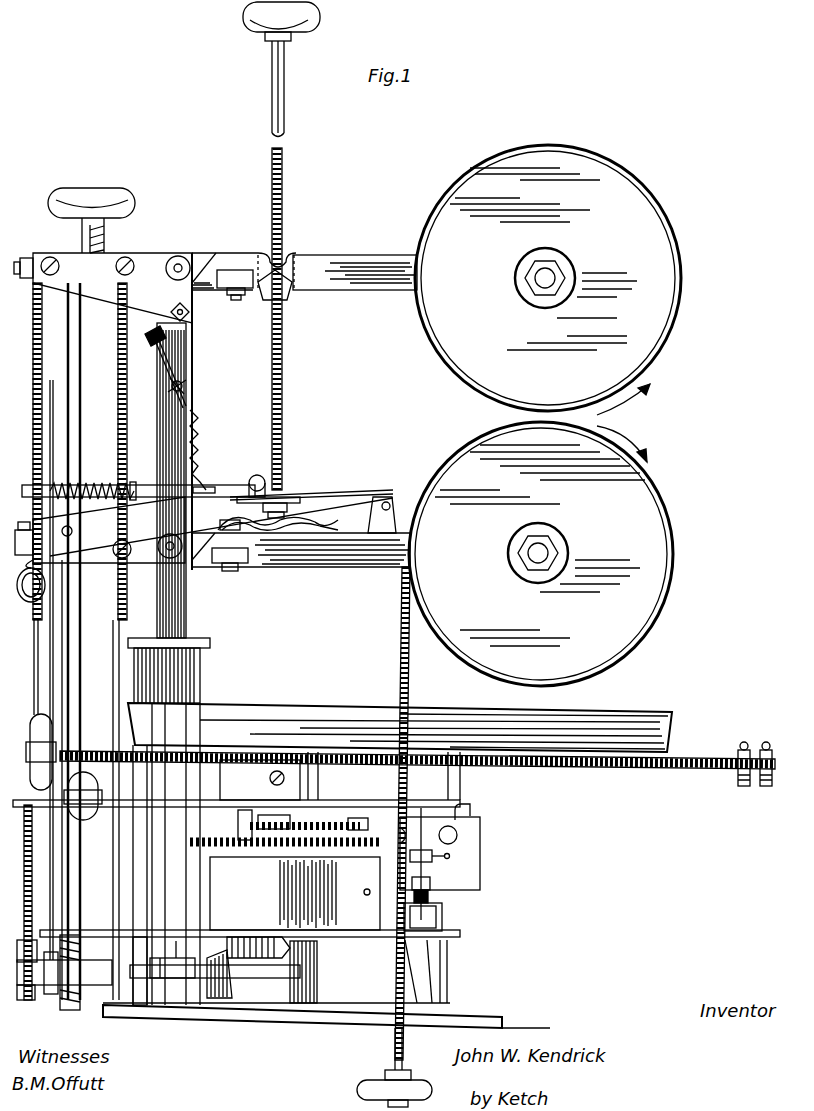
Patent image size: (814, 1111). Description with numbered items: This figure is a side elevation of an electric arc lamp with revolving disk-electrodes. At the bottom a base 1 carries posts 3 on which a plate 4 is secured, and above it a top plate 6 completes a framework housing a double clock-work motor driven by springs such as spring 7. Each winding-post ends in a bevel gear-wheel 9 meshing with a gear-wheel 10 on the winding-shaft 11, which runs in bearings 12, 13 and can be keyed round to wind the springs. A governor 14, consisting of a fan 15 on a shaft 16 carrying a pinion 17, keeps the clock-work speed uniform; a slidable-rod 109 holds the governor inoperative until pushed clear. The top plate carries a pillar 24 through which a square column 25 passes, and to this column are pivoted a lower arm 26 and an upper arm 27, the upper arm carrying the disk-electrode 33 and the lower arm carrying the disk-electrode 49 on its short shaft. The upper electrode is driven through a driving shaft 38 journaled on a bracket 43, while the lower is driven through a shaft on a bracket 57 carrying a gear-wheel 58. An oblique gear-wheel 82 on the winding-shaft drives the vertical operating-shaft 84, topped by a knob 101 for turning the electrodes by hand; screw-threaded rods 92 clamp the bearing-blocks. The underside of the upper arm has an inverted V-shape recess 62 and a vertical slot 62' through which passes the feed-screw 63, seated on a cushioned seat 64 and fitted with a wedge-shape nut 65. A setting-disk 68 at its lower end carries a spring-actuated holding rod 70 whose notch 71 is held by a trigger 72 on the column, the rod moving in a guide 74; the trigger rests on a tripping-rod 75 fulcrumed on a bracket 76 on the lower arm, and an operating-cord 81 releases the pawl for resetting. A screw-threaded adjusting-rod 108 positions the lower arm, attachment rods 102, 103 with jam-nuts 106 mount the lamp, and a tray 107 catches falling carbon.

The base 1 is at (298, 1022).
The posts 3 is at (430, 975).
The plate 4 is at (382, 941).
The top plate 6 is at (466, 806).
The spring 7 is at (285, 870).
The bevel gear-wheel 9 is at (246, 975).
The gear-wheel 10 is at (215, 998).
The winding-shaft 11 is at (160, 980).
The bearing 12 is at (310, 968).
The bearing 13 is at (170, 948).
The governor 14 is at (460, 866).
The fan 15 is at (458, 843).
The shaft 16 is at (432, 922).
The pinion 17 is at (458, 890).
The pillar 24 is at (190, 684).
The column 25 is at (187, 610).
The arm 26 is at (301, 516).
The arm 27 is at (380, 288).
The disk-electrode 33 is at (548, 278).
The driving shaft 38 is at (27, 256).
The bracket 43 is at (112, 288).
The disk-electrode 49 is at (541, 554).
The bracket 57 is at (100, 530).
The gear-wheel 58 is at (62, 600).
The inverted V-shape recess 62 is at (283, 296).
The vertical slot 62' is at (298, 256).
The feed-screw 63 is at (283, 387).
The cushioned seat 64 is at (278, 515).
The wedge-shape nut 65 is at (250, 298).
The setting-disk 68 is at (278, 496).
The holding rod 70 is at (230, 484).
The notch 71 is at (210, 486).
The trigger 72 is at (196, 499).
The guide 74 is at (50, 385).
The tripping-rod 75 is at (300, 495).
The bracket 76 is at (398, 512).
The operating-cord 81 is at (145, 534).
The oblique gear-wheel 82 is at (70, 1005).
The operating-shaft 84 is at (66, 676).
The screw-threaded rods 92 is at (116, 688).
The knob 101 is at (82, 182).
The screw-threaded rod 102 is at (648, 769).
The screw-threaded rod 103 is at (268, 778).
The jam-nuts 106 is at (762, 790).
The tray 107 is at (400, 727).
The adjusting-rod 108 is at (400, 655).
The slidable-rod 109 is at (104, 810).